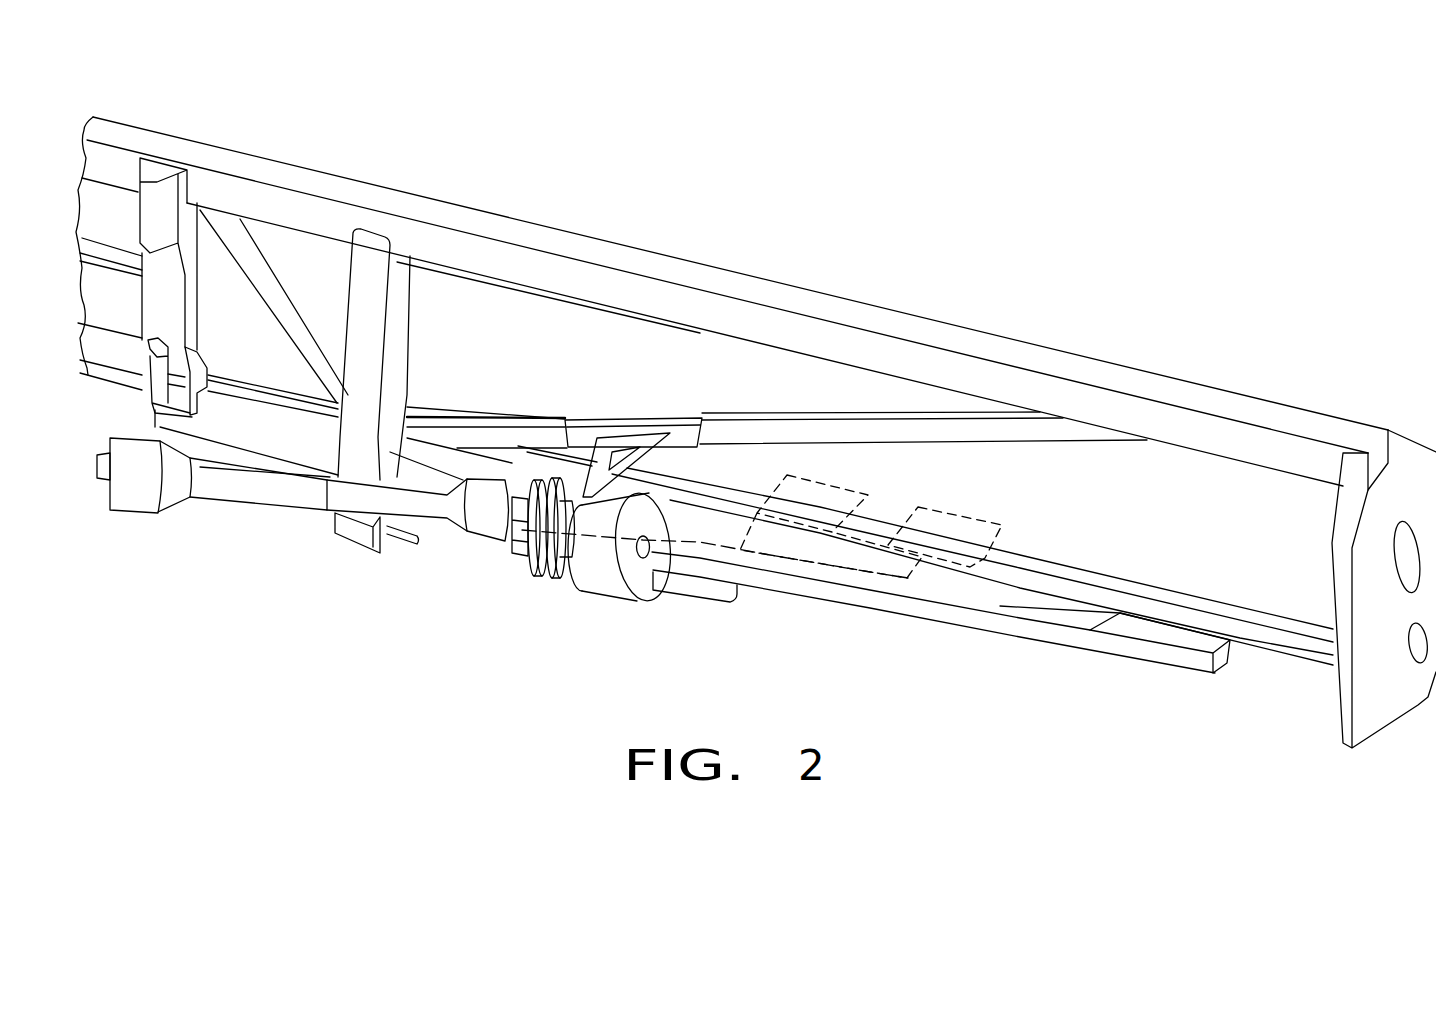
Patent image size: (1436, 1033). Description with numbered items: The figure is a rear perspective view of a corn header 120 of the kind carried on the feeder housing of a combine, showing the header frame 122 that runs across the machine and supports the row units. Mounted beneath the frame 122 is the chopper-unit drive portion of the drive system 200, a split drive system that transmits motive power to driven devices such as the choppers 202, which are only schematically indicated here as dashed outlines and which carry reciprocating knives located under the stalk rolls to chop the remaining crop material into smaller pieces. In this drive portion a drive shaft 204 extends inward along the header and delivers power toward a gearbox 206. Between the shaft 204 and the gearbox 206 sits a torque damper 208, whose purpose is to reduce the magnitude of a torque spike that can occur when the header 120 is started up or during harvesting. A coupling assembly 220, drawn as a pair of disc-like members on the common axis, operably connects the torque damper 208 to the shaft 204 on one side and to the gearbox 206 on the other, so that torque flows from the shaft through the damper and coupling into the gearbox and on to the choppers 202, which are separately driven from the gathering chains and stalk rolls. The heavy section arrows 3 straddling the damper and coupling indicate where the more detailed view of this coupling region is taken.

The header 120 is at (603, 222).
The header frame 122 is at (778, 290).
The drive system 200 is at (413, 610).
The choppers 202 is at (847, 487).
The drive shaft 204 is at (247, 493).
The gearbox 206 is at (631, 583).
The torque damper 208 is at (548, 572).
The coupling assembly 220 is at (526, 578).
The section view indicator 3 is at (522, 508).